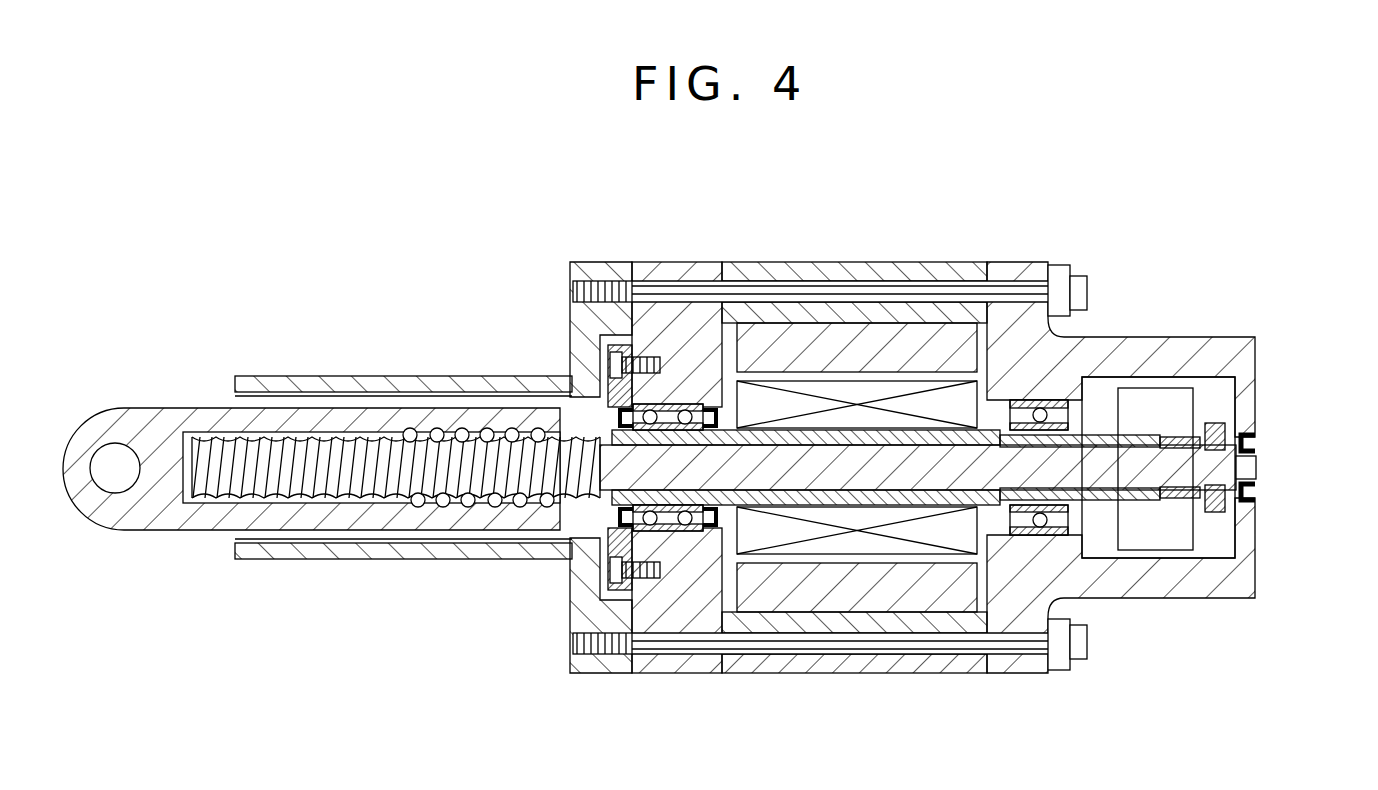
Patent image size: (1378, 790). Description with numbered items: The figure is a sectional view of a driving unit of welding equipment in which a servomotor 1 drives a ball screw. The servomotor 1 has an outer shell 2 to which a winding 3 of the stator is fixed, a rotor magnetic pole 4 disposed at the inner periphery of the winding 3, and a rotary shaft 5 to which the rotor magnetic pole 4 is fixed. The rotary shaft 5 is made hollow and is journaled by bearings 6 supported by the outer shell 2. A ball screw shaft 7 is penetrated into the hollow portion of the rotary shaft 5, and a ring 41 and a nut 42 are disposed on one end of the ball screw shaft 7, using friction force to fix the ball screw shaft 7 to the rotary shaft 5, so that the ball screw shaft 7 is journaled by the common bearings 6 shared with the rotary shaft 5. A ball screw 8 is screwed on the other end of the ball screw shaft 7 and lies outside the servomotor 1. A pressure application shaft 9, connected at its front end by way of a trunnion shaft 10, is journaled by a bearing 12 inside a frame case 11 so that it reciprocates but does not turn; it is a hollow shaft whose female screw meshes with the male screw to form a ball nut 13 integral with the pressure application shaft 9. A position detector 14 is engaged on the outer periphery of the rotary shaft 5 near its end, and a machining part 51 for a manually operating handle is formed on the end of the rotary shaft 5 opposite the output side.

The servomotor 1 is at (748, 250).
The outer shell 2 is at (682, 268).
The winding 3 is at (880, 612).
The rotor magnetic pole 4 is at (818, 554).
The rotary shaft 5 is at (944, 505).
The bearings 6 is at (686, 535).
The ball screw shaft 7 is at (1108, 463).
The ball screw 8 is at (312, 450).
The pressure application shaft 9 is at (160, 432).
The trunnion shaft 10 is at (118, 478).
The frame case 11 is at (500, 376).
The bearing 12 is at (290, 560).
The ball nut 13 is at (412, 430).
The position detector 14 is at (1160, 530).
The ring 41 is at (1212, 535).
The nut 42 is at (1225, 522).
The machining part 51 is at (1258, 467).